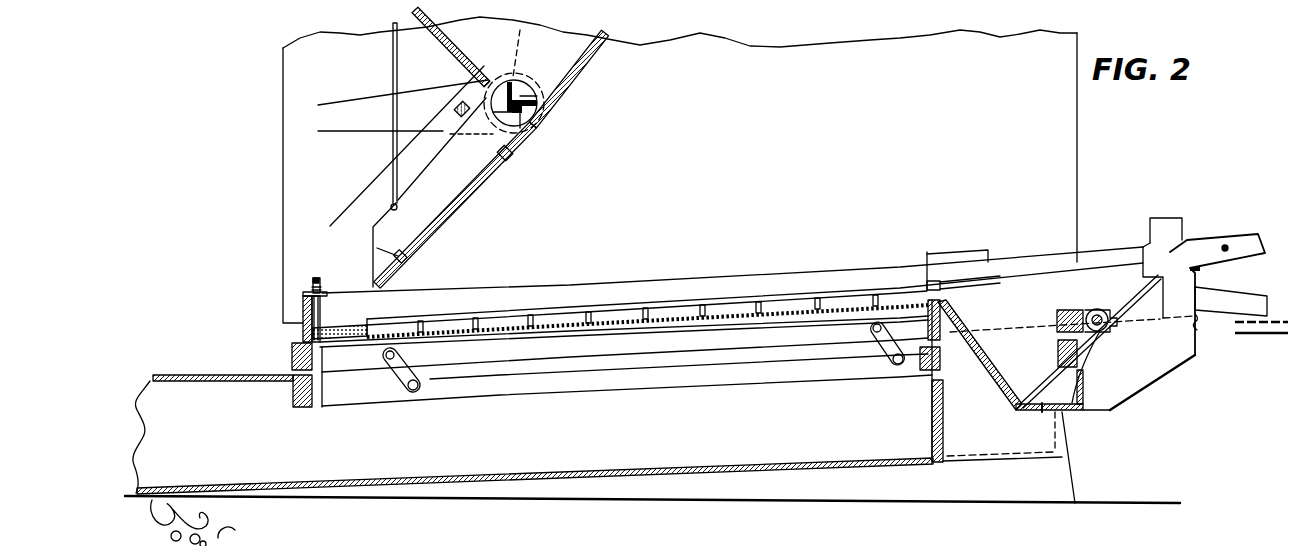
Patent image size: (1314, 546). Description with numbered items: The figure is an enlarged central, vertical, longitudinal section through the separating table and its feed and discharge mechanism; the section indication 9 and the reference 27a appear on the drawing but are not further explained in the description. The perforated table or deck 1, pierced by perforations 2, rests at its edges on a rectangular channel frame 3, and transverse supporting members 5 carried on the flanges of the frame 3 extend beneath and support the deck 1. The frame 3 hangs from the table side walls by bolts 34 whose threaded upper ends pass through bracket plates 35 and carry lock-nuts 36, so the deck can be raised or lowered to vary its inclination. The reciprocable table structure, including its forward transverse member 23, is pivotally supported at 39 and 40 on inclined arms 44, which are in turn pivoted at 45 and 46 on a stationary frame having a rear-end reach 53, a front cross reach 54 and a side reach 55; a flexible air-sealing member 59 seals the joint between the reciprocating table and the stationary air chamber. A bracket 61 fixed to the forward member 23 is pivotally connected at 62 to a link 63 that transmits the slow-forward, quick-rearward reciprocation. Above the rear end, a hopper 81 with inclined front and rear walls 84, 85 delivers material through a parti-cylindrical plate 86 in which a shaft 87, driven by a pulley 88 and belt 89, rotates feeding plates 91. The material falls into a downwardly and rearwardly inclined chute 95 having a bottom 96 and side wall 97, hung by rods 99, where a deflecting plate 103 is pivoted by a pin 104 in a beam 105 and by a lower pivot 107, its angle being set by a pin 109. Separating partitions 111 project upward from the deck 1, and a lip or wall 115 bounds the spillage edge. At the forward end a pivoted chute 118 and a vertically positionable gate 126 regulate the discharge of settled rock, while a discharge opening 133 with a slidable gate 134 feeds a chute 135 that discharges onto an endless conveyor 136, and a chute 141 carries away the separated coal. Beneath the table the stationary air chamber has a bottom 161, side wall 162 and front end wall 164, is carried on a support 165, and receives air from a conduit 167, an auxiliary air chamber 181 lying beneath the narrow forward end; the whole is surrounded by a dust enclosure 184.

The table or deck 1 is at (733, 316).
The perforations 2 is at (680, 316).
The rectangular frame 3 is at (323, 406).
The transverse supporting members 5 is at (455, 342).
The section line 9 is at (492, 62).
The forward transverse member 23 is at (1057, 320).
The roller axis 27a is at (962, 324).
The bolts 34 is at (322, 312).
The bracket plates 35 is at (323, 290).
The lock-nuts 36 is at (310, 286).
The pivotal support 39 is at (393, 368).
The pivotal support 40 is at (872, 348).
The arms 44 is at (388, 386).
The pivot 45 is at (413, 392).
The pivot 46 is at (903, 368).
The rear-end reach 53 is at (294, 397).
The front cross reach 54 is at (943, 365).
The side reach 55 is at (655, 383).
The flexible air-sealing member 59 is at (292, 368).
The bracket 61 is at (1120, 372).
The pivotal connection 62 is at (1115, 357).
The link 63 is at (1148, 331).
The hopper 81 is at (555, 42).
The front wall 84 is at (448, 42).
The rear wall 85 is at (582, 54).
The parti-cylindrical plate 86 is at (538, 124).
The shaft 87 is at (538, 102).
The driving pulley 88 is at (520, 44).
The belt 89 is at (366, 72).
The feeding plates 91 is at (488, 140).
The chute 95 is at (466, 196).
The bottom 96 is at (440, 222).
The side wall 97 is at (373, 233).
The rods 99 is at (393, 143).
The deflecting plate 103 is at (420, 198).
The pivot pin 104 is at (455, 107).
The beam 105 is at (428, 120).
The pivot 107 is at (512, 162).
The pin 109 is at (405, 260).
The separating partitions 111 is at (617, 300).
The lip or wall 115 is at (994, 282).
The chute 118 is at (1247, 208).
The gate 126 is at (1165, 226).
The discharge opening 133 is at (937, 283).
The gate 134 is at (957, 253).
The chute 135 is at (1245, 279).
The endless traveling conveyor 136 is at (1265, 336).
The chute 141 is at (1042, 408).
The bottom 161 is at (755, 475).
The side wall 162 is at (850, 456).
The front end wall 164 is at (942, 430).
The support 165 is at (1062, 482).
The conduit 167 is at (175, 413).
The auxiliary air chamber 181 is at (1140, 380).
The dust enclosure and collecting device 184 is at (283, 188).